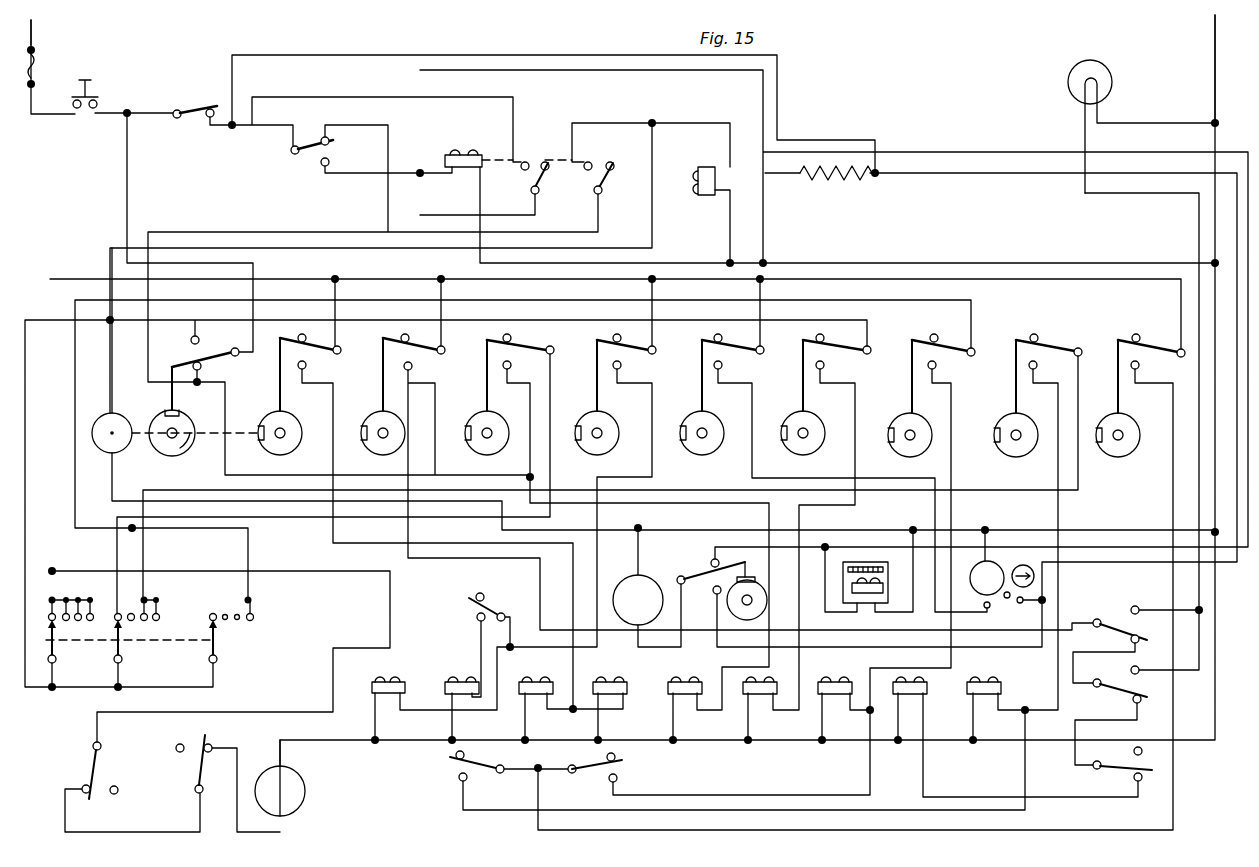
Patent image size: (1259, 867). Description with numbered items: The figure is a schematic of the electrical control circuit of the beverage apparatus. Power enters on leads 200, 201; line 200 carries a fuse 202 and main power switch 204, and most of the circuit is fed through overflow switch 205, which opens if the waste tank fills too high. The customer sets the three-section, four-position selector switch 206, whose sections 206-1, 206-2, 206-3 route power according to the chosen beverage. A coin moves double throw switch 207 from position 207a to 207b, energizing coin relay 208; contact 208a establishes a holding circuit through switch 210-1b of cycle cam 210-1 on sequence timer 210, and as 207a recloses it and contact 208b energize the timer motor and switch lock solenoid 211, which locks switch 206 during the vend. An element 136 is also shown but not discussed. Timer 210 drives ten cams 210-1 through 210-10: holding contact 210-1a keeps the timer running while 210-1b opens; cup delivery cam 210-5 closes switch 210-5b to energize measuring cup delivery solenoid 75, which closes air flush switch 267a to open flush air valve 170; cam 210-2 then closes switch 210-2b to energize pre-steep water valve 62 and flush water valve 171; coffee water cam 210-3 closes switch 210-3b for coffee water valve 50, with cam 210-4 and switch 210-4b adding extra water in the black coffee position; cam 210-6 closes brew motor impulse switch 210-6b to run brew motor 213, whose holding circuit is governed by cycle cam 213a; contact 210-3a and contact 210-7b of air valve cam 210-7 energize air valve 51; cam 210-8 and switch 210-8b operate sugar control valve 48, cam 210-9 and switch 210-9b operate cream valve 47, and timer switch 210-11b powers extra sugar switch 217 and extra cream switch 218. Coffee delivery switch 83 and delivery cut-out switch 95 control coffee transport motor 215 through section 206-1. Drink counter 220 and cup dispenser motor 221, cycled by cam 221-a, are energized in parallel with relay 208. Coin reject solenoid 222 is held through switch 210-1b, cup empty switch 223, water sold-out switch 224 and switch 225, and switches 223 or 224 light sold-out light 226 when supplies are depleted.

The power lead 200 is at (34, 36).
The fuse 202 is at (36, 68).
The main power switch 204 is at (98, 88).
The overflow switch 205 is at (195, 106).
The double throw switch 207 is at (310, 136).
The switch position 207a is at (331, 141).
The switch position 207b is at (322, 168).
The coin relay 208 is at (463, 154).
The relay contact 208a is at (517, 155).
The relay contact 208b is at (575, 157).
The switch lock solenoid 211 is at (704, 167).
The resistor 136 is at (836, 182).
The sold-out light 226 is at (1090, 60).
The power lead 201 is at (1213, 28).
The sequence timer 210 is at (116, 414).
The cycle cam 210-1 is at (190, 414).
The holding contact 210-1a is at (200, 338).
The timer switch 210-1b is at (202, 366).
The cam 210-2 is at (292, 412).
The timer switch 210-2b is at (307, 366).
The coffee water cam 210-3 is at (395, 412).
The switch contact 210-3a is at (404, 334).
The timer switch 210-3b is at (413, 368).
The cam 210-4 is at (498, 413).
The timer switch 210-4b is at (512, 362).
The cup delivery cam 210-5 is at (610, 413).
The timer switch 210-5b is at (622, 367).
The cam 210-6 is at (712, 452).
The brew motor impulse switch 210-6b is at (723, 367).
The air valve cam 210-7 is at (820, 455).
The switch contact 210-7b is at (825, 367).
The cam 210-8 is at (892, 452).
The timer switch 210-8b is at (937, 367).
The cam 210-9 is at (998, 458).
The timer switch 210-9b is at (1038, 362).
The cam 210-10 is at (1118, 460).
The timer switch 210-11b is at (1140, 368).
The selector switch 206 is at (159, 639).
The selector switch section 206-1 is at (73, 627).
The selector switch section 206-2 is at (124, 660).
The selector switch section 206-3 is at (220, 658).
The coffee delivery switch 83 is at (91, 763).
The delivery cut-out switch 95 is at (195, 767).
The coffee transport motor 215 is at (302, 804).
The measuring cup delivery solenoid 75 is at (390, 681).
The flush air valve 170 is at (463, 681).
The flush water valve 171 is at (538, 681).
The pre-steep water valve 62 is at (611, 681).
The coffee water valve 50 is at (687, 681).
The air valve 51 is at (752, 700).
The sugar control valve 48 is at (837, 681).
The coin reject solenoid 222 is at (930, 685).
The cream valve 47 is at (985, 681).
The air flush switch 267a is at (494, 602).
The cup dispenser motor 221 is at (658, 580).
The cam 221-a is at (763, 615).
The drink counter 220 is at (890, 563).
The brew motor 213 is at (977, 565).
The cycle cam 213a is at (1012, 562).
The cup empty switch 223 is at (1104, 618).
The water sold-out switch 224 is at (1104, 688).
The switch 225 is at (1118, 776).
The extra cream switch 218 is at (478, 762).
The extra sugar switch 217 is at (592, 764).